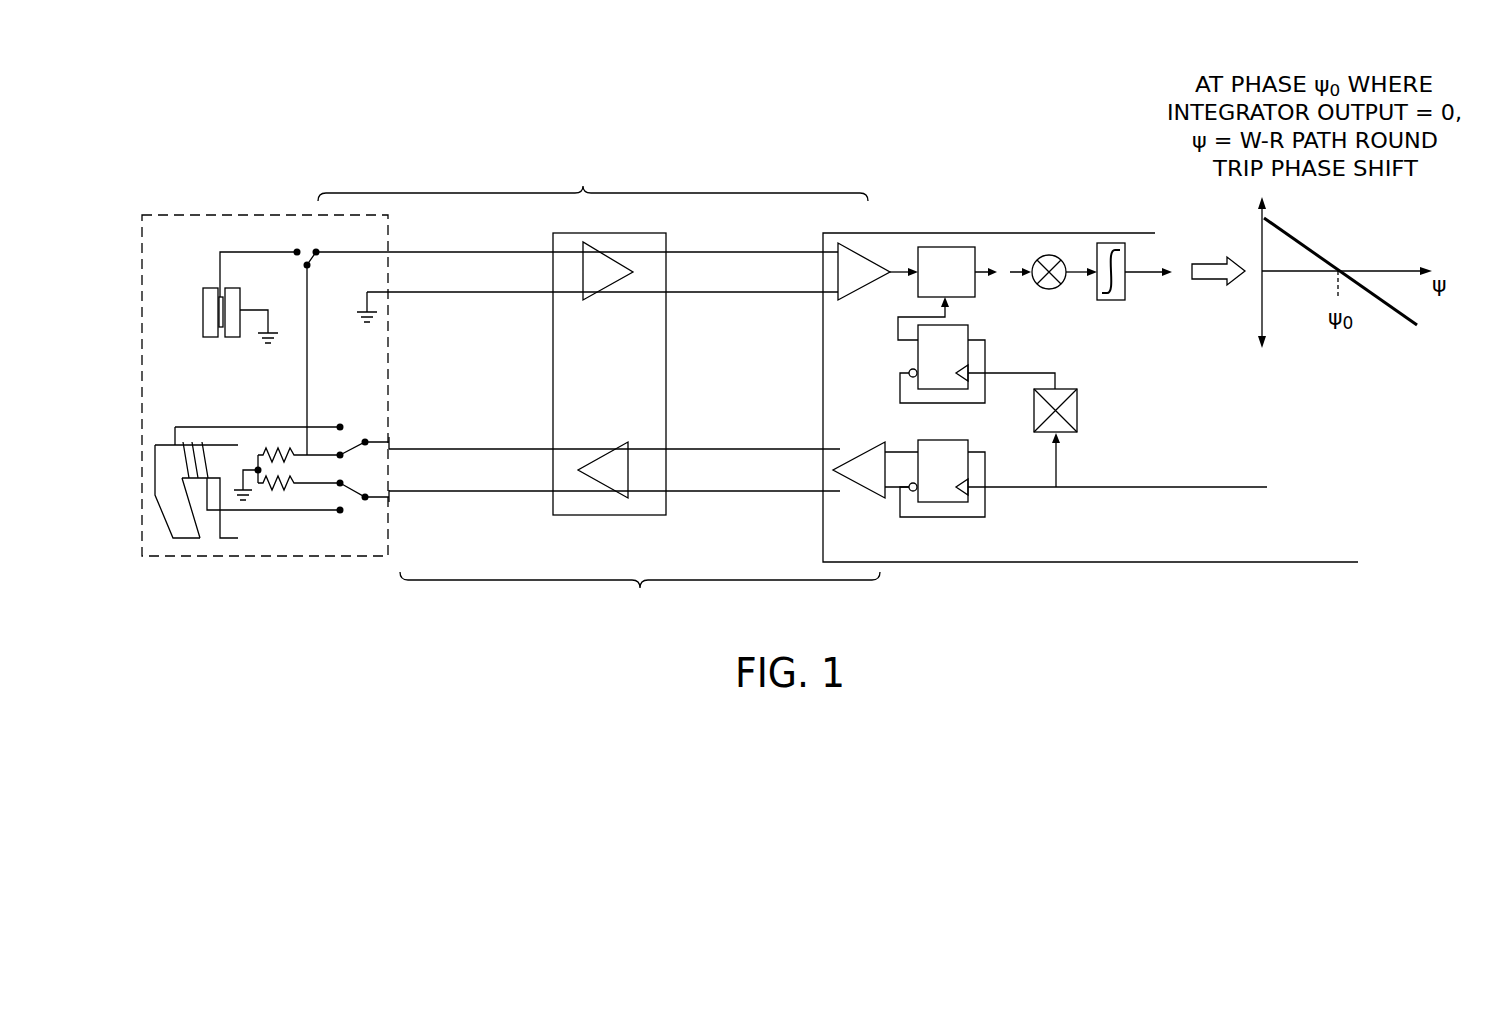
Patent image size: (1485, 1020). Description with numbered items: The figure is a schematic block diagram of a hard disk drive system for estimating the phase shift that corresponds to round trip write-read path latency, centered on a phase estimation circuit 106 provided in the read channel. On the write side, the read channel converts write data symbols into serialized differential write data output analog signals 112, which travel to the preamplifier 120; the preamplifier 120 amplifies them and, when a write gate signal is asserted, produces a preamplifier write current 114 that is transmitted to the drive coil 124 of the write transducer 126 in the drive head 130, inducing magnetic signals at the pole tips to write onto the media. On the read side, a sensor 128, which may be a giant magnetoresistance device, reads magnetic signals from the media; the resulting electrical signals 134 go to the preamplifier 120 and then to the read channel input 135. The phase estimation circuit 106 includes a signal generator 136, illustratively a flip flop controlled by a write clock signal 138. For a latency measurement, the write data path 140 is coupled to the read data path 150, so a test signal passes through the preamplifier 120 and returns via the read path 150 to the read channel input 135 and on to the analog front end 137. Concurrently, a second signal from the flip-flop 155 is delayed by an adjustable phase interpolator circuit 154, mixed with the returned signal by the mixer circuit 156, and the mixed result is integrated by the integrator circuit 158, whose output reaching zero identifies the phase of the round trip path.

The phase estimation circuit 106 is at (1009, 570).
The serialized differential write data output analog signals 112 is at (728, 500).
The preamplifier write current 114 is at (487, 500).
The preamplifier 120 is at (582, 517).
The drive coil 124 is at (260, 515).
The write transducer 126 is at (155, 445).
The sensor 128 is at (203, 310).
The drive head 130 is at (343, 557).
The electrical signals 134 is at (487, 250).
The read channel input 135 is at (865, 253).
The signal generator 136 is at (958, 440).
The analog front end 137 is at (947, 247).
The write clock signal 138 is at (1316, 514).
The write data path 140 is at (640, 599).
The read data path 150 is at (593, 182).
The adjustable phase interpolator circuit 154 is at (1068, 389).
The flip-flop 155 is at (918, 353).
The mixer circuit 156 is at (1049, 255).
The integrator circuit 158 is at (1110, 243).